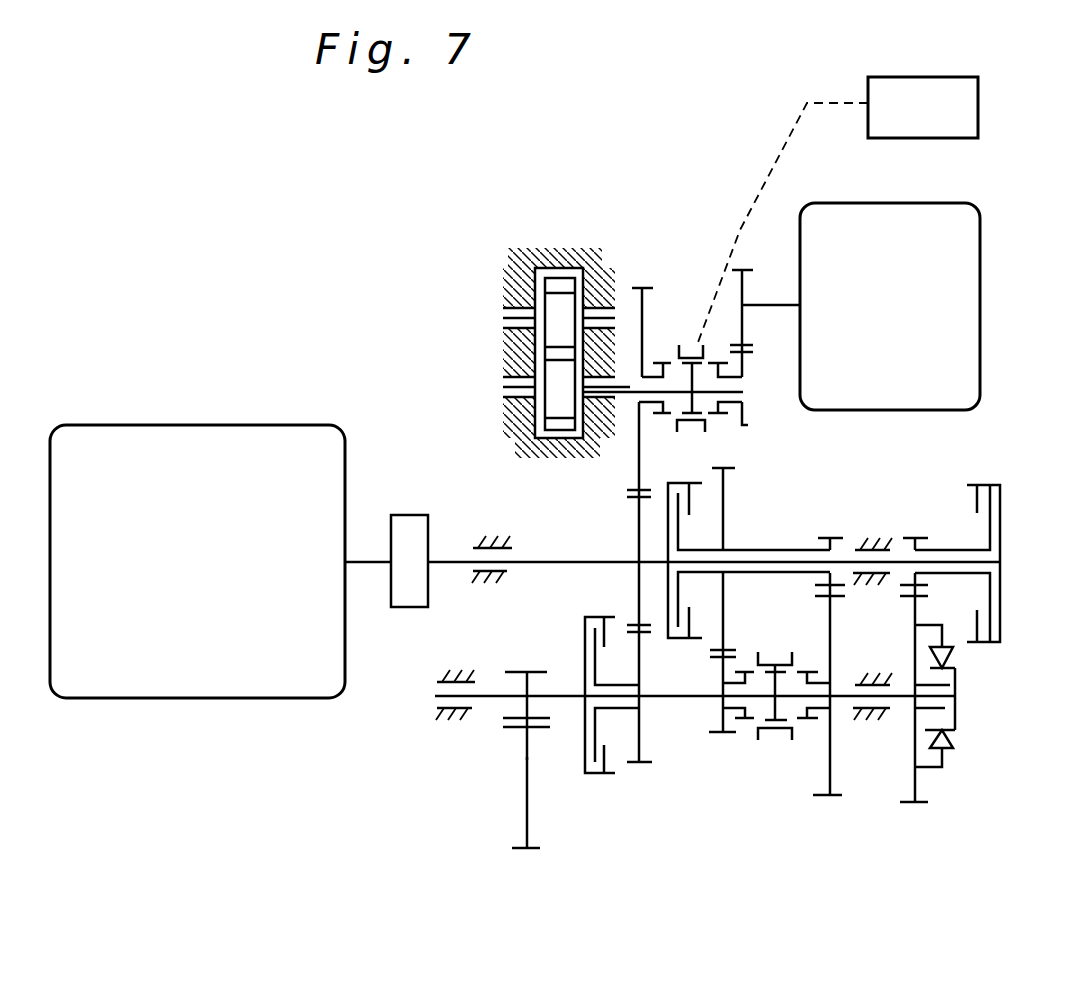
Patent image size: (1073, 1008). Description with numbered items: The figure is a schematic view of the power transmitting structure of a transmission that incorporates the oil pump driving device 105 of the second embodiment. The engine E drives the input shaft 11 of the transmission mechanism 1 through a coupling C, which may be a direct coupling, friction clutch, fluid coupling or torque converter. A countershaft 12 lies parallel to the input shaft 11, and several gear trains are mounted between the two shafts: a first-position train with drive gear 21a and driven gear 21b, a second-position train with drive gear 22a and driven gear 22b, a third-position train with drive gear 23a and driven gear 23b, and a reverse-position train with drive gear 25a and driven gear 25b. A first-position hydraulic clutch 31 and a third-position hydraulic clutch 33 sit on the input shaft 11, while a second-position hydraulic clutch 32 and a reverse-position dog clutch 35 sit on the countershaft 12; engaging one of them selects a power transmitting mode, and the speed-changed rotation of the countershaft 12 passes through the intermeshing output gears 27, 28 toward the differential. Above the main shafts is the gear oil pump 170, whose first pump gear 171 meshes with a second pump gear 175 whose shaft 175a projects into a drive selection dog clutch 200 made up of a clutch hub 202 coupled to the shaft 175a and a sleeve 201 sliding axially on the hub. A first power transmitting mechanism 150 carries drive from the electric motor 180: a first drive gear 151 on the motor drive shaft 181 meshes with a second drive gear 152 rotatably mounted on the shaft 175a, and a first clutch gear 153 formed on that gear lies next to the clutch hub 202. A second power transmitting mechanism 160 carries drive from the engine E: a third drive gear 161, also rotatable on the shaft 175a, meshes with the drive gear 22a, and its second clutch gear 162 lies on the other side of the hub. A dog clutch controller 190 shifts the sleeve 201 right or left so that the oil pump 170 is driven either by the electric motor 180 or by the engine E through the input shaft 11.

The transmission mechanism 1 is at (725, 824).
The input shaft 11 is at (578, 561).
The countershaft 12 is at (657, 698).
The drive gear 21a is at (915, 535).
The driven gear 21b is at (907, 805).
The drive gear 22a is at (639, 514).
The driven gear 22b is at (634, 765).
The drive gear 23a is at (726, 497).
The driven gear 23b is at (731, 735).
The drive gear 25a is at (832, 535).
The driven gear 25b is at (833, 800).
The output gear 27 is at (522, 672).
The output gear 28 is at (527, 757).
The first-position hydraulic clutch 31 is at (1003, 500).
The second-position hydraulic clutch 32 is at (588, 776).
The third-position hydraulic clutch 33 is at (666, 600).
The reverse-position dog clutch 35 is at (780, 662).
The oil pump driving device 105 is at (580, 186).
The first power transmitting mechanism 150 is at (773, 208).
The first drive gear 151 is at (745, 268).
The second drive gear 152 is at (748, 425).
The first clutch gear 153 is at (724, 413).
The second power transmitting mechanism 160 is at (648, 219).
The third drive gear 161 is at (637, 287).
The second clutch gear 162 is at (660, 363).
The gear oil pump 170 is at (543, 241).
The first pump gear 171 is at (553, 302).
The second pump gear 175 is at (556, 400).
The shaft 175a is at (612, 393).
The electric motor 180 is at (912, 318).
The drive shaft 181 is at (768, 308).
The dog clutch controller 190 is at (923, 107).
The drive selection dog clutch 200 is at (698, 294).
The sleeve 201 is at (722, 342).
The clutch hub 202 is at (690, 402).
The coupling C is at (407, 525).
The engine E is at (218, 563).